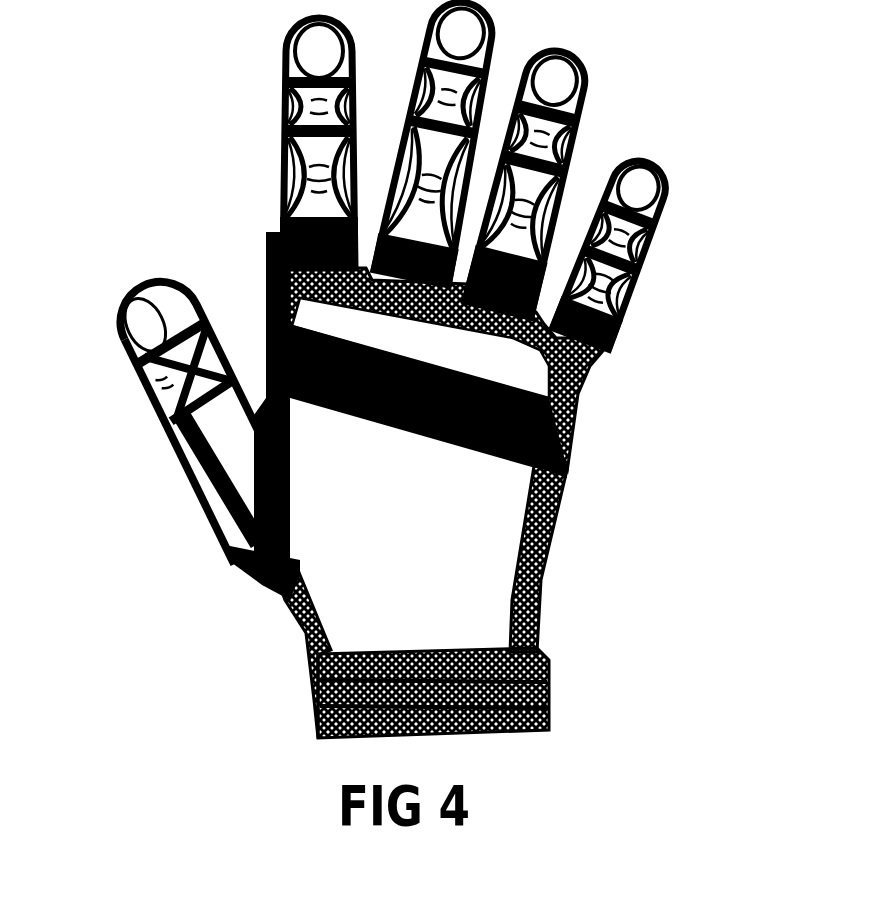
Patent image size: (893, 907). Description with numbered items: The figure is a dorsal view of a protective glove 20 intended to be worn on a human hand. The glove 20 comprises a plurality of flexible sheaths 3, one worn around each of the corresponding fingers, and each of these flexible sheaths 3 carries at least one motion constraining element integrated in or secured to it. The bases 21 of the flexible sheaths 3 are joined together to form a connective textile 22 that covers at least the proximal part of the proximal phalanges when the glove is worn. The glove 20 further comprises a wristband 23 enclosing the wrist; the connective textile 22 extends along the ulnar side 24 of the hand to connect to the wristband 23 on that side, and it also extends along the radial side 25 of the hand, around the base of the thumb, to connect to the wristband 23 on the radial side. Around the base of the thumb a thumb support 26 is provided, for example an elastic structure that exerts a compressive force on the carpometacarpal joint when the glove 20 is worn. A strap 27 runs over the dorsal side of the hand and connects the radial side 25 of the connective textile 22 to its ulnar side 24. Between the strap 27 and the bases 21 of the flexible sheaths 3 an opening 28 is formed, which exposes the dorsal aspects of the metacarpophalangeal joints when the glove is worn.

The glove 20 is at (390, 369).
The flexible sheaths 3 is at (531, 307).
The bases of the flexible sheaths 21 is at (254, 273).
The connective textile 22 is at (588, 367).
The wristband 23 is at (543, 697).
The ulnar side 24 is at (550, 538).
The radial side 25 is at (280, 607).
The thumb support 26 is at (257, 523).
The strap 27 is at (565, 445).
The opening 28 is at (478, 357).